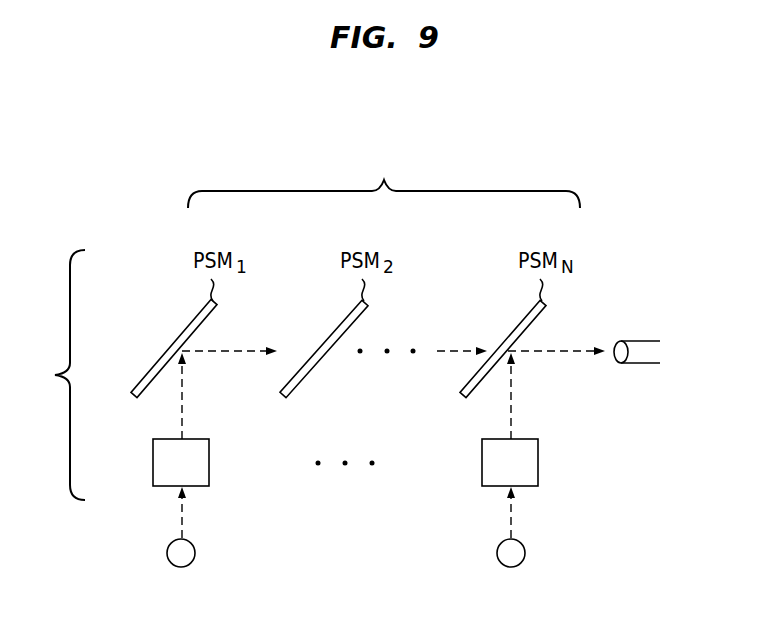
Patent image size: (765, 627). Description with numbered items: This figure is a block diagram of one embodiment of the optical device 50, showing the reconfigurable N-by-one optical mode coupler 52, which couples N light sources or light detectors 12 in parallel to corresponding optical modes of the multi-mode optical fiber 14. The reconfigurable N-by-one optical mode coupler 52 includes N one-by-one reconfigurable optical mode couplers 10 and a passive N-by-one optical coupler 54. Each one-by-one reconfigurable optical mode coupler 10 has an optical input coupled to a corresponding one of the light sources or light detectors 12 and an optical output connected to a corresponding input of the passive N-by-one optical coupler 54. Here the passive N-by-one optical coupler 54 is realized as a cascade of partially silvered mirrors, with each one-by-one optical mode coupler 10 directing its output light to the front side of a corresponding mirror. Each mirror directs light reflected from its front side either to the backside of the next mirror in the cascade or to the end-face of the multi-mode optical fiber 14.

The optical device 50 is at (88, 142).
The reconfigurable N×1 optical mode coupler 52 is at (53, 375).
The passive N×1 optical coupler 54 is at (384, 178).
The light sources or light detectors 12 is at (199, 439).
The 1×1 reconfigurable optical mode coupler 10 is at (194, 548).
The multi-mode optical fiber 14 is at (640, 341).